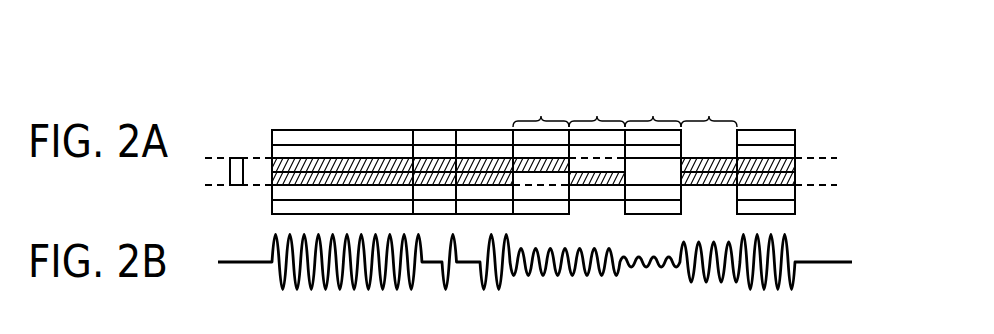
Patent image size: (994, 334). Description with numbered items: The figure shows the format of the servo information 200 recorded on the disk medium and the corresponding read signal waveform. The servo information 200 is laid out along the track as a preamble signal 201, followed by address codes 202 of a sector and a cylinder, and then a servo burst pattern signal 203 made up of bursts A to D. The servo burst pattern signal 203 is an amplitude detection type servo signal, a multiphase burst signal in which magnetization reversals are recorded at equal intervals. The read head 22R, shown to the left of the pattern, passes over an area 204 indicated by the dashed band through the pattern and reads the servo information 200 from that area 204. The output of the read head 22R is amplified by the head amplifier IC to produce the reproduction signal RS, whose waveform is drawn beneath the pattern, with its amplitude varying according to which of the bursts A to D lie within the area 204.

In FIG. 2A, the read head 22R is at (238, 157).
In FIG. 2A, the servo information 200 is at (795, 58).
In FIG. 2A, the preamble signal (PAD) 201 is at (413, 97).
In FIG. 2A, the address codes 202 is at (513, 97).
In FIG. 2A, the servo burst pattern signal (A to D) 203 is at (737, 97).
In FIG. 2A, the area 204 is at (843, 158).
In FIG. 2B, the reproduction signal RS is at (519, 262).